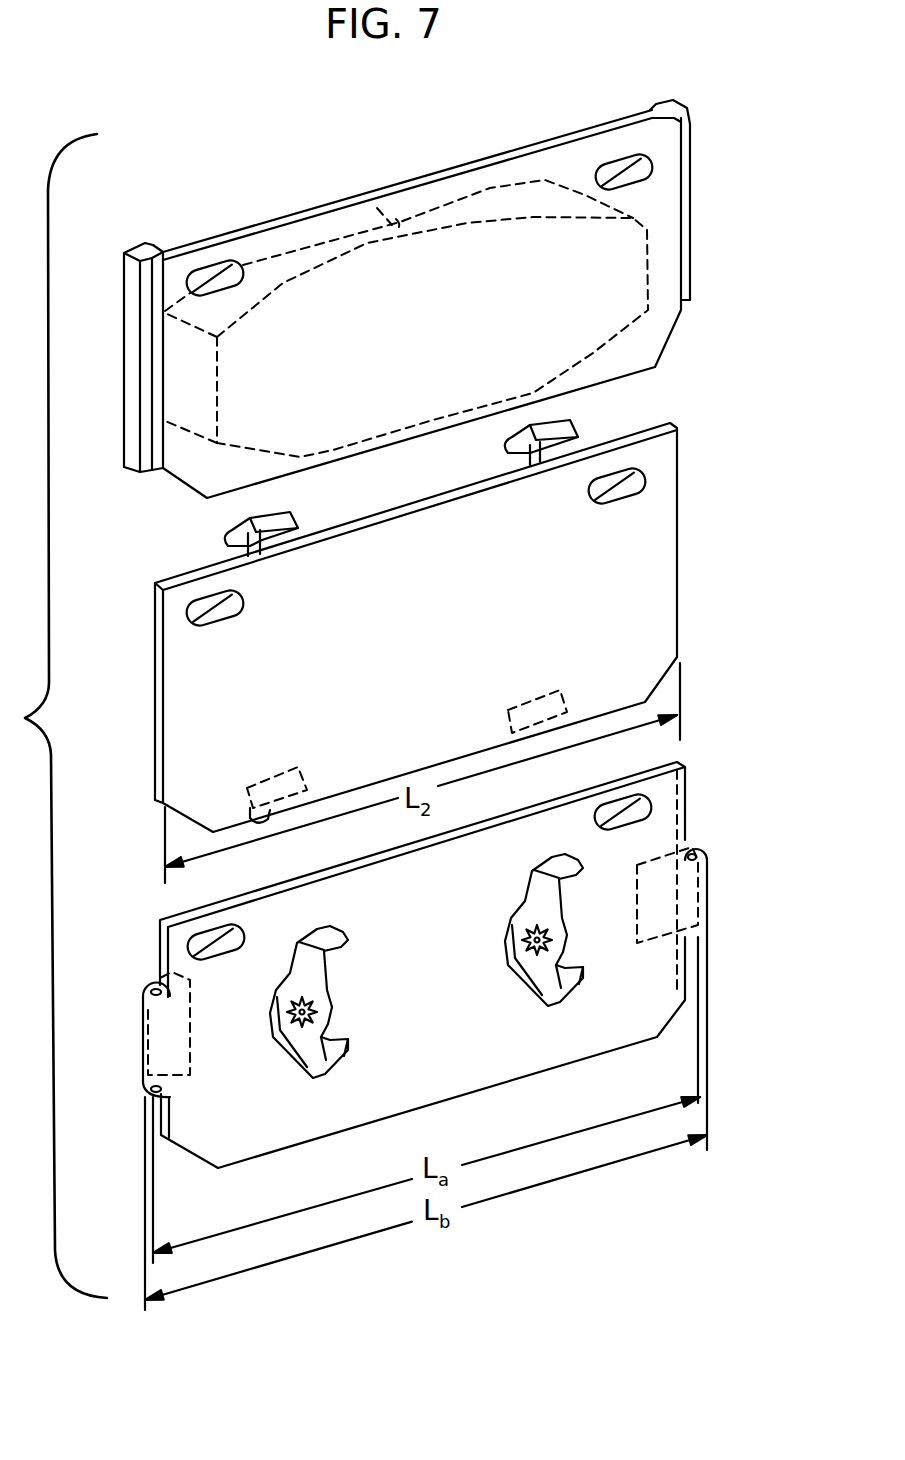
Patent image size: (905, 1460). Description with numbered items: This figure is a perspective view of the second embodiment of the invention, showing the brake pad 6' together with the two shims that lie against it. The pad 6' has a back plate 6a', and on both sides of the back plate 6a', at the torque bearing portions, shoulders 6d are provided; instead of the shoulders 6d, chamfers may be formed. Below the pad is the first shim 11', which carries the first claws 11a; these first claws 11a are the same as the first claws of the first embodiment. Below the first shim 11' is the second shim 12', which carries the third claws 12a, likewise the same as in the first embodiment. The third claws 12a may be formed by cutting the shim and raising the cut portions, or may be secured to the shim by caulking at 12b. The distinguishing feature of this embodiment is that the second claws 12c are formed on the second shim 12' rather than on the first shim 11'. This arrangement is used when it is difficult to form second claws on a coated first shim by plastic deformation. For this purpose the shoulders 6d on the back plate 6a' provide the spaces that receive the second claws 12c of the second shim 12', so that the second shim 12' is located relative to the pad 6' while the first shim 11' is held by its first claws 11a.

The pad 6' is at (466, 308).
The back plate 6a' is at (388, 291).
The shoulder 6d is at (683, 157).
The first shim 11' is at (471, 627).
The first claw 11a is at (230, 527).
The second shim 12' is at (422, 996).
The third claw 12a is at (572, 988).
The caulking 12b is at (527, 957).
The second claw 12c is at (707, 905).